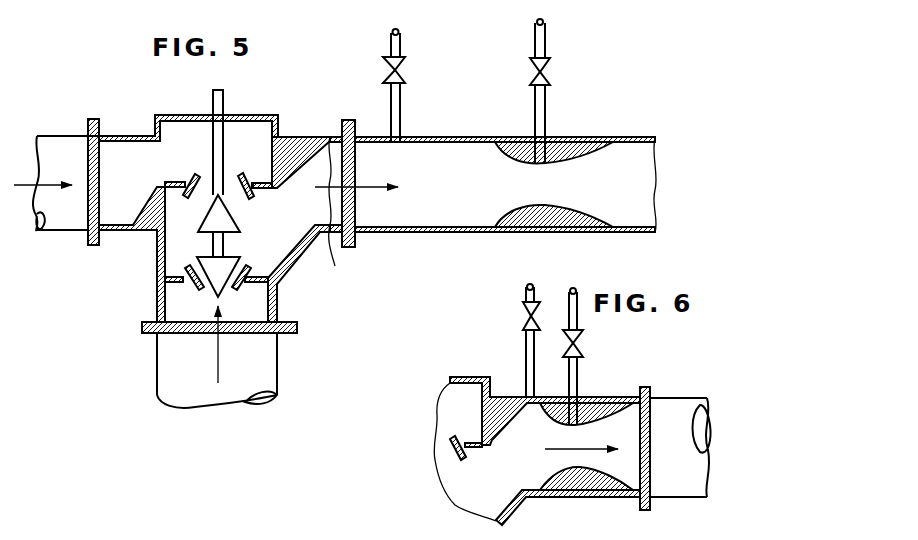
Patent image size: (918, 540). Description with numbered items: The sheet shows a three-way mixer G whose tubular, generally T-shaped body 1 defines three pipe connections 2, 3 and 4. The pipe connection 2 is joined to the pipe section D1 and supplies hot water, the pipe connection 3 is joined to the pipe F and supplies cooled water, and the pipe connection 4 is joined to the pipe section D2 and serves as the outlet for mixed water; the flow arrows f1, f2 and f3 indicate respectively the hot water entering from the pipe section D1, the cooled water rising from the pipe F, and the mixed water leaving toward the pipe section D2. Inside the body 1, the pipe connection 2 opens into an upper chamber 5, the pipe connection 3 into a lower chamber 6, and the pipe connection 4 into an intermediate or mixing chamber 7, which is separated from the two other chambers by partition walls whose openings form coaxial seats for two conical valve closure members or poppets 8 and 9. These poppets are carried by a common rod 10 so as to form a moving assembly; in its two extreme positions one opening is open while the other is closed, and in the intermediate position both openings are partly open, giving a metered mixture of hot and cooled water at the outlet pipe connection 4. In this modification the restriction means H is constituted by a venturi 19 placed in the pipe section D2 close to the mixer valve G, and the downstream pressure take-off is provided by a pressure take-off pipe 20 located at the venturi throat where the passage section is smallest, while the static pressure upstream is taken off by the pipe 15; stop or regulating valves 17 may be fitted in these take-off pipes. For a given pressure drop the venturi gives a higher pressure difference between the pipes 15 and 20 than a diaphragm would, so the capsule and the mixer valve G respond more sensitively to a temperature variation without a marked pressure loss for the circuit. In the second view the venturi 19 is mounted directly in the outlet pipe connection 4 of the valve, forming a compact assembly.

In FIG. 5, the pipe section D1 is at (60, 132).
In FIG. 5, the pipe section D2 is at (459, 135).
In FIG. 6, the pipe section D2 is at (680, 395).
In FIG. 5, the tubular generally T-shaped body 1 is at (160, 124).
In FIG. 5, the pipe connection 2 is at (118, 135).
In FIG. 5, the pipe connection 3 is at (157, 296).
In FIG. 5, the pipe connection 4 is at (342, 199).
In FIG. 5, the upper chamber 5 is at (153, 161).
In FIG. 5, the lower chamber 6 is at (216, 292).
In FIG. 5, the intermediate or mixing chamber 7 is at (218, 202).
In FIG. 5, the conical valve closure member 8 is at (239, 208).
In FIG. 5, the conical valve closure member 9 is at (243, 262).
In FIG. 5, the common rod 10 is at (223, 100).
In FIG. 5, the pipe 15 is at (389, 113).
In FIG. 6, the pipe 15 is at (526, 373).
In FIG. 5, the stop valve or regulating valve 17 is at (531, 66).
In FIG. 6, the stop valve or regulating valve 17 is at (564, 340).
In FIG. 5, the venturi 19 is at (521, 161).
In FIG. 6, the venturi 19 is at (555, 479).
In FIG. 5, the pressure take-off pipe 20 is at (546, 109).
In FIG. 6, the pressure take-off pipe 20 is at (578, 375).
In FIG. 5, the three-way mixer G is at (148, 250).
In FIG. 6, the three-way mixer G is at (463, 372).
In FIG. 5, the pipe F is at (154, 360).
In FIG. 5, the restriction means H is at (575, 184).
In FIG. 6, the restriction means H is at (618, 433).
In FIG. 5, the primary flow f1 is at (43, 175).
In FIG. 5, the secondary flow f2 is at (227, 344).
In FIG. 5, the mixed flow f3 is at (356, 175).
In FIG. 6, the mixed flow f3 is at (576, 439).